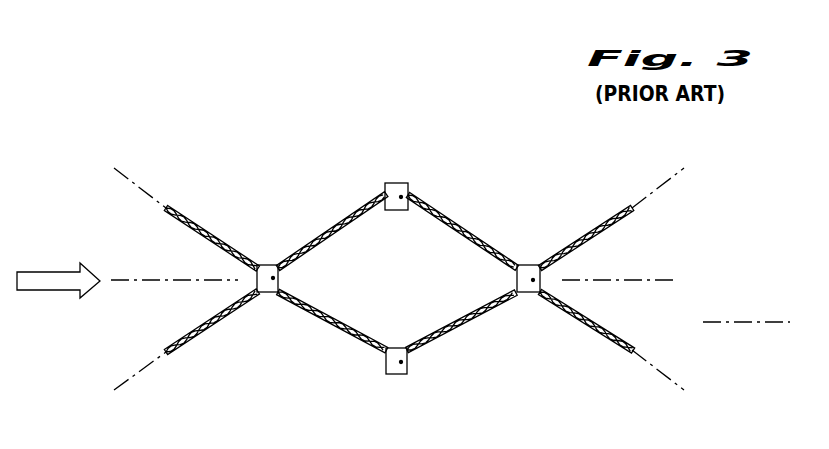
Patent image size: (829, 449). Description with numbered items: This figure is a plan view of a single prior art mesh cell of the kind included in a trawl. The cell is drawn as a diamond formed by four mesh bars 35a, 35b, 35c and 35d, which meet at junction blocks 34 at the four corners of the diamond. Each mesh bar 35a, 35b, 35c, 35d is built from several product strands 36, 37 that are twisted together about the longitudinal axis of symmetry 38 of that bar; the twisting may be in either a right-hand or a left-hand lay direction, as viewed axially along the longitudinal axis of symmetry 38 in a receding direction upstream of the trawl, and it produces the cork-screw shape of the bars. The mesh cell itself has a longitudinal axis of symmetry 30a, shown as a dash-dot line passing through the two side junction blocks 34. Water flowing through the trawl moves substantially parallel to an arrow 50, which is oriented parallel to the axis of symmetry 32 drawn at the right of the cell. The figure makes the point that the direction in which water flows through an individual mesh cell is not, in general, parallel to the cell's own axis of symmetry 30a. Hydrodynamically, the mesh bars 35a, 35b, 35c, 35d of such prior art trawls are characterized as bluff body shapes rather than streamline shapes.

The longitudinal axis of symmetry 30a is at (152, 280).
The axis of symmetry 32 is at (743, 322).
The junction block 34 is at (270, 265).
The mesh bar 35a is at (329, 340).
The mesh bar 35b is at (302, 199).
The mesh bar 35c is at (501, 212).
The mesh bar 35d is at (473, 343).
The product strand 36 is at (319, 241).
The product strand 37 is at (346, 221).
The longitudinal axis of symmetry 38 is at (131, 172).
The arrow 50 is at (47, 272).